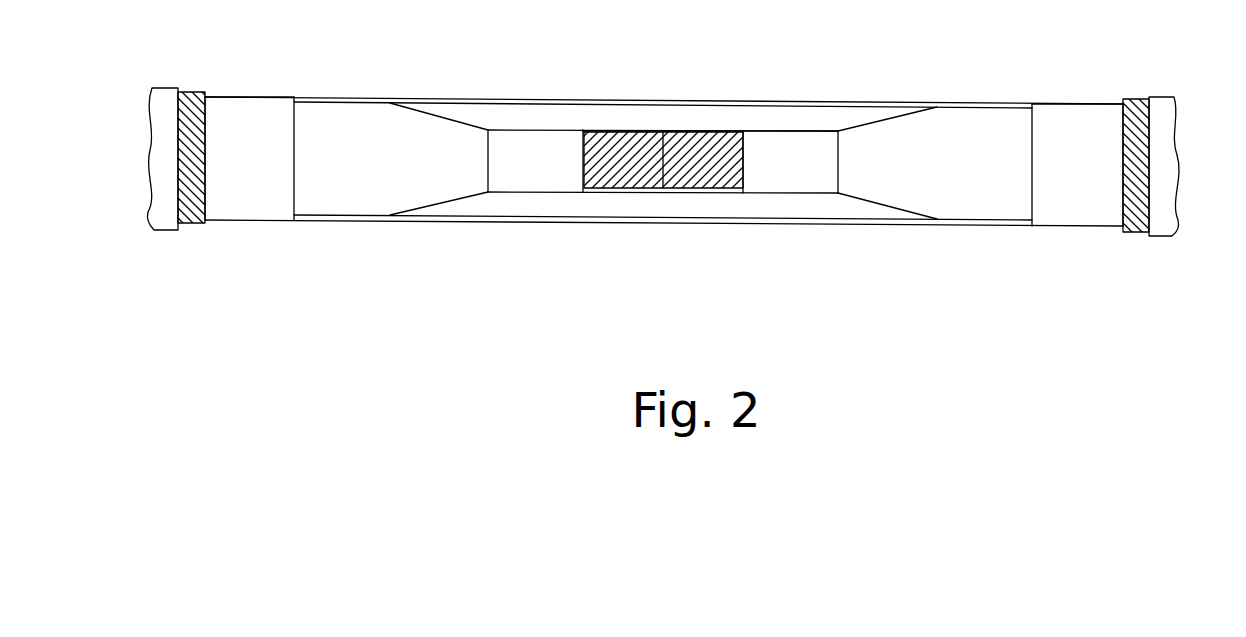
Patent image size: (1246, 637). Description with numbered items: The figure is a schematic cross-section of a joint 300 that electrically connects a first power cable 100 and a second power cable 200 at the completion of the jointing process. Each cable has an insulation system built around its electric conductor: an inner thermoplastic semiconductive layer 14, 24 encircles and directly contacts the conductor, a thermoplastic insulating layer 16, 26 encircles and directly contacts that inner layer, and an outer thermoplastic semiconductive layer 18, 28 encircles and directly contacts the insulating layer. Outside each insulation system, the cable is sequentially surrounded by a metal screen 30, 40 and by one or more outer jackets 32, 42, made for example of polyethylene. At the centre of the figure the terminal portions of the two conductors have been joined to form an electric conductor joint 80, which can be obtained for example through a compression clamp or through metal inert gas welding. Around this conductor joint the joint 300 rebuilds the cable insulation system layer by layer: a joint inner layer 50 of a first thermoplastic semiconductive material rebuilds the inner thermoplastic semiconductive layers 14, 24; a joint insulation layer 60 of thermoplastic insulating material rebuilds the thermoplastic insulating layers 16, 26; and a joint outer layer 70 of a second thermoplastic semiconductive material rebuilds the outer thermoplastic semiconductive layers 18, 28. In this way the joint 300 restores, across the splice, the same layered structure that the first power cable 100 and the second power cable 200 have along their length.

The inner thermoplastic semiconductive layer 14 is at (525, 172).
The thermoplastic insulating layer 16 is at (345, 193).
The outer thermoplastic semiconductive layer 18 is at (250, 221).
The inner thermoplastic semiconductive layer 24 is at (793, 150).
The thermoplastic insulating layer 26 is at (993, 191).
The outer thermoplastic semiconductive layer 28 is at (1078, 228).
The metal screen 30 is at (193, 90).
The outer jacket 32 is at (160, 145).
The metal screen 40 is at (1137, 100).
The outer jacket 42 is at (1167, 183).
The joint inner layer 50 is at (718, 133).
The joint insulation layer 60 is at (533, 118).
The joint outer layer 70 is at (797, 223).
The electric conductor joint 80 is at (660, 170).
The first power cable 100 is at (247, 83).
The second power cable 200 is at (1077, 88).
The joint 300 is at (663, 90).